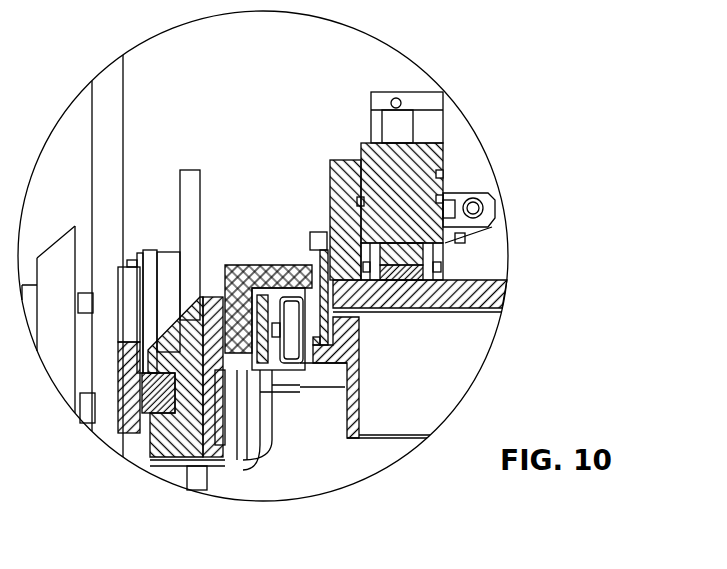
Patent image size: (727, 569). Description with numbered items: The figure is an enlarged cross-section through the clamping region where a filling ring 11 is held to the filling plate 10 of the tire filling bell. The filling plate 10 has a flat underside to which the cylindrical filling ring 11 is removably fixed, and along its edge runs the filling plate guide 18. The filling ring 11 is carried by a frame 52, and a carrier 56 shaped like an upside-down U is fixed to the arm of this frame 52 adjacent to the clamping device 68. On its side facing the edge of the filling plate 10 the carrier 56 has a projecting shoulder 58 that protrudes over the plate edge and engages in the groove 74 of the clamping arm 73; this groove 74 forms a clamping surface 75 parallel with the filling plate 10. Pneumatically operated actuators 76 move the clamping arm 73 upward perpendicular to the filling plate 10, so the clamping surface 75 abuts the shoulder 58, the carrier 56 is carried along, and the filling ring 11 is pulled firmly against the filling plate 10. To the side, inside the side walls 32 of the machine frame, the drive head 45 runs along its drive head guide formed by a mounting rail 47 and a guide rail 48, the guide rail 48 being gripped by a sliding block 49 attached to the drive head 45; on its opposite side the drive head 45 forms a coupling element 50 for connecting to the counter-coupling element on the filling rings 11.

The filling plate 10 is at (486, 294).
The filling ring 11 is at (387, 440).
The filling plate guide 18 is at (300, 380).
The side walls 32 is at (100, 164).
The drive head 45 is at (210, 440).
The mounting rail 47 is at (123, 378).
The guide rail 48 is at (147, 413).
The sliding block 49 is at (173, 440).
The coupling element 50 is at (230, 383).
The frame 52 is at (337, 337).
The carrier 56 is at (250, 264).
The shoulder 58 is at (328, 252).
The clamping device 68 is at (442, 160).
The clamping arm 73 is at (347, 158).
The groove 74 is at (340, 240).
The clamping surface 75 is at (342, 283).
The actuators 76 is at (433, 122).